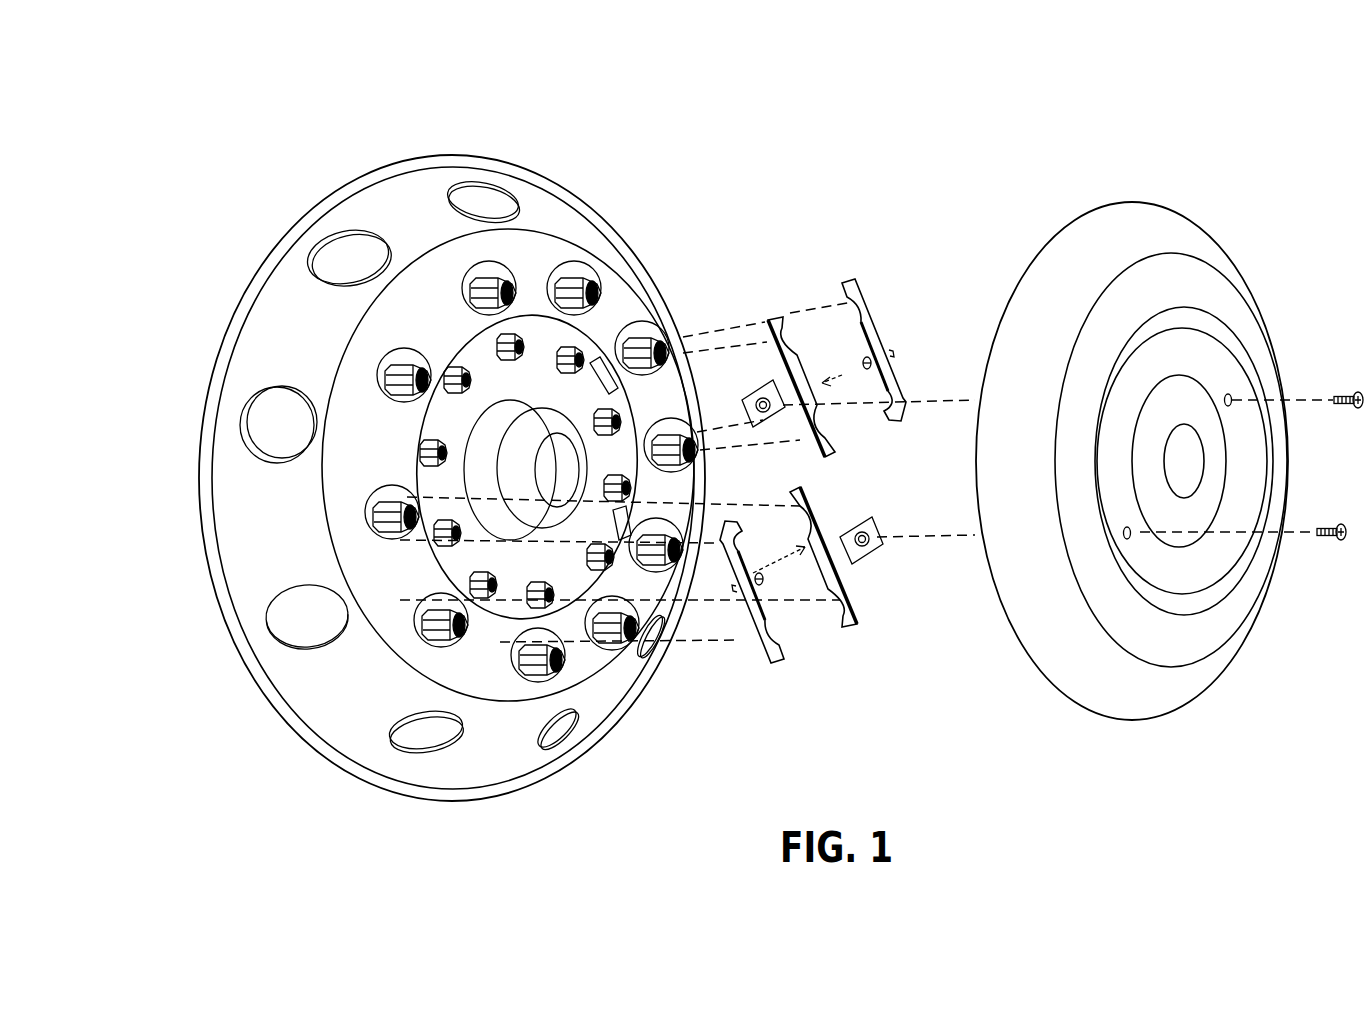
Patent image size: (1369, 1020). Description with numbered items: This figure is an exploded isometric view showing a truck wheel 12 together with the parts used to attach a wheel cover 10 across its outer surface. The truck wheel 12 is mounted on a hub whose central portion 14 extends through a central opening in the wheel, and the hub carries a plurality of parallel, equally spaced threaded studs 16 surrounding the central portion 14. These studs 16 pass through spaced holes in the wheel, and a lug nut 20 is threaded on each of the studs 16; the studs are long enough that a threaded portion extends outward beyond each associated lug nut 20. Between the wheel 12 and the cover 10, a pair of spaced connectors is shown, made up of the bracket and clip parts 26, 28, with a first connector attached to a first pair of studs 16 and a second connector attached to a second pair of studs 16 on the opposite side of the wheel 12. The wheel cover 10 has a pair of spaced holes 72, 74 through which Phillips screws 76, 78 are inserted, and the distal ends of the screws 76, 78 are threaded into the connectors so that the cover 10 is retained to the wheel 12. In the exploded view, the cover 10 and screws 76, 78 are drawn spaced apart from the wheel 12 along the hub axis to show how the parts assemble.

The wheel cover 10 is at (1110, 202).
The truck wheel 12 is at (580, 196).
The central portion 14 is at (543, 418).
The threaded studs 16 is at (505, 272).
The lug nut 20 is at (385, 500).
The mounting clips 26 is at (756, 312).
The mounting brackets 28 is at (883, 323).
The hole 72 is at (1229, 393).
The hole 74 is at (1128, 540).
The Phillips screw 76 is at (1338, 388).
The Phillips screw 78 is at (1332, 545).